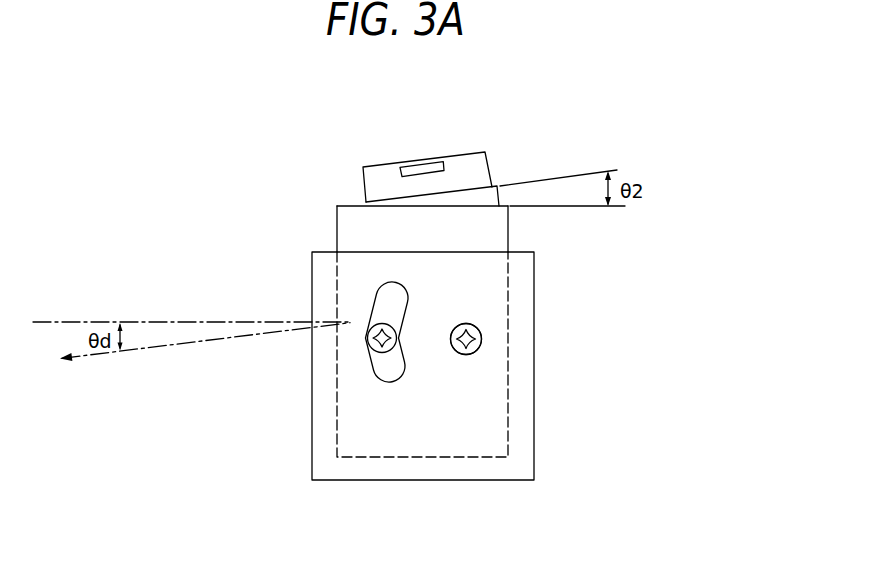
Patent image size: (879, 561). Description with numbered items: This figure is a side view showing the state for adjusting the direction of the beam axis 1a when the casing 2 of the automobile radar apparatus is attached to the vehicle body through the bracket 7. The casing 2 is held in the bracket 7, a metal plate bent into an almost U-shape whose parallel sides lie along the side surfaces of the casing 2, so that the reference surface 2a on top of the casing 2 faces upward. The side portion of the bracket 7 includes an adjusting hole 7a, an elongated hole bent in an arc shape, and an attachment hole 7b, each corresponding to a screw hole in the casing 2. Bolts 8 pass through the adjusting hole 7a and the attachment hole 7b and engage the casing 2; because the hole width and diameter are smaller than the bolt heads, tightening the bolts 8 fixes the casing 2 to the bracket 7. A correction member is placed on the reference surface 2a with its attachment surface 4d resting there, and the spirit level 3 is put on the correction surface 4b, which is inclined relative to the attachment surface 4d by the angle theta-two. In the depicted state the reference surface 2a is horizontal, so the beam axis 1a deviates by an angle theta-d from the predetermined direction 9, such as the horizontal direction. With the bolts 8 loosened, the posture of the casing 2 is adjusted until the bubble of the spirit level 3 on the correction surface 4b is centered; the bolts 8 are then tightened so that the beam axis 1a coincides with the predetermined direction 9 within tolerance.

The spirit level 3 is at (463, 167).
The reference surface 2a is at (468, 199).
The correction surface 4b is at (500, 175).
The attachment surface 4d is at (492, 222).
The casing 2 is at (500, 235).
The bracket 7 is at (517, 414).
The adjusting hole 7a is at (372, 308).
The attachment hole 7b is at (485, 334).
The bolt 8 is at (368, 348).
The predetermined direction 9 is at (70, 321).
The beam axis 1a is at (168, 347).